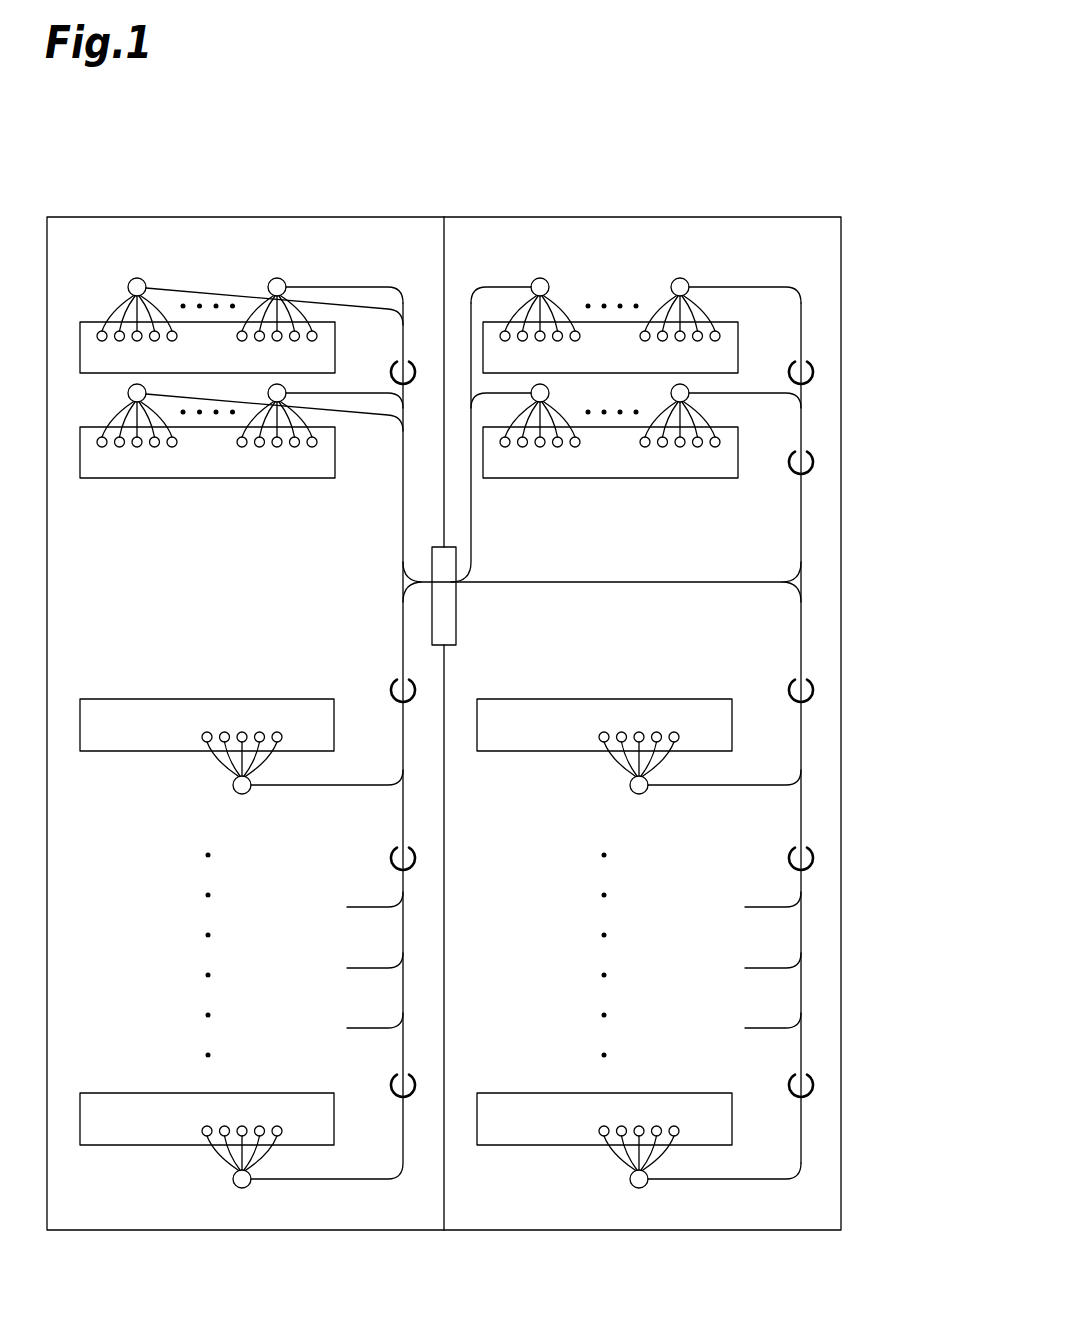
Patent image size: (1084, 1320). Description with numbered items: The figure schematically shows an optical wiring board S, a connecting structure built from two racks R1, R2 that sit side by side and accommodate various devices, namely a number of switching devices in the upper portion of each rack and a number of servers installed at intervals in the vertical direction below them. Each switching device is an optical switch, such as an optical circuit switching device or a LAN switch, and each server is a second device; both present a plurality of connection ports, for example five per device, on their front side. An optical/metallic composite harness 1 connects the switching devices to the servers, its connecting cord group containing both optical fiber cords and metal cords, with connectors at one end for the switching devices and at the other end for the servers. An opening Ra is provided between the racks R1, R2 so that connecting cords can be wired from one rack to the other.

The optical wiring board S is at (882, 254).
The rack R2 is at (118, 217).
The rack R1 is at (770, 217).
The opening Ra is at (458, 619).
The optical/metallic composite harness 1 is at (818, 540).